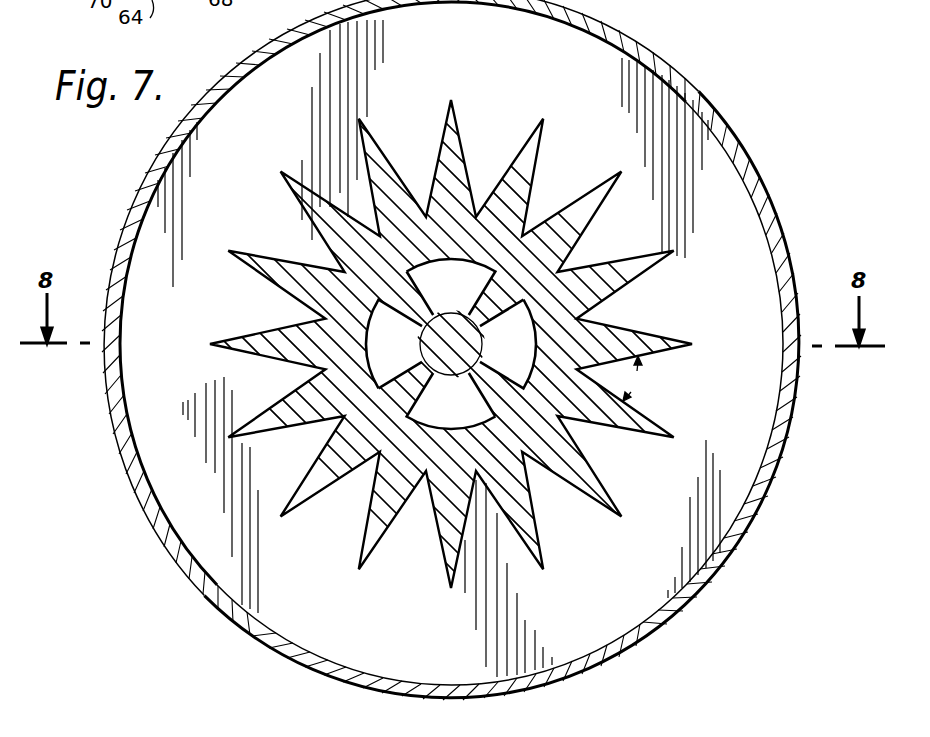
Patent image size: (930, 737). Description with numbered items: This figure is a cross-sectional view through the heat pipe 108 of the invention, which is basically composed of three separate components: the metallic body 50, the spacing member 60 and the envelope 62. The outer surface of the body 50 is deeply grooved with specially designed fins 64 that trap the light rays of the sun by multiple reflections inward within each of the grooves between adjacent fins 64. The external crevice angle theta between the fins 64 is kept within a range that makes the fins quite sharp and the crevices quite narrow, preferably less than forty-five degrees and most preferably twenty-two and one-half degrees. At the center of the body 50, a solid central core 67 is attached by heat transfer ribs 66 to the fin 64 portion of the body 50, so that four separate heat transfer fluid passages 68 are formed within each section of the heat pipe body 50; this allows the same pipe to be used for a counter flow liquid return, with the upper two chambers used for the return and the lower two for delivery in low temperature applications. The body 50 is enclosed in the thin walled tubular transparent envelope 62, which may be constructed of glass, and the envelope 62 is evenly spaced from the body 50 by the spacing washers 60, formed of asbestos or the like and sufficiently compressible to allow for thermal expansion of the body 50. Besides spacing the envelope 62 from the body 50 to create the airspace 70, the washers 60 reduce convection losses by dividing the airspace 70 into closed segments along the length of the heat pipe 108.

The metallic body 50 is at (465, 368).
The spacing member 60 is at (249, 165).
The envelope 62 is at (748, 154).
The fins 64 is at (633, 408).
The heat transfer ribs 66 is at (386, 300).
The solid central core 67 is at (441, 353).
The heat transfer fluid passages 68 is at (680, 0).
The airspace 70 is at (735, 243).
The heat pipe 108 is at (706, 87).